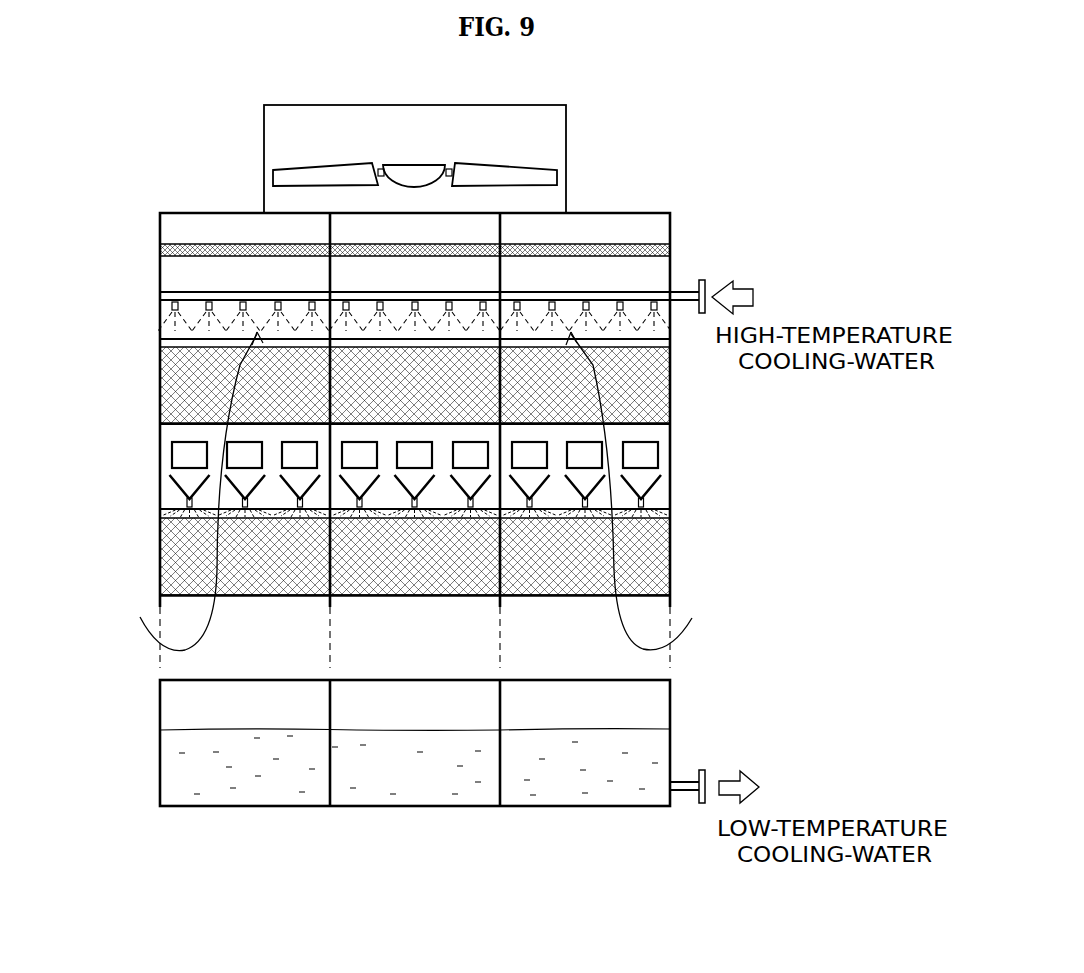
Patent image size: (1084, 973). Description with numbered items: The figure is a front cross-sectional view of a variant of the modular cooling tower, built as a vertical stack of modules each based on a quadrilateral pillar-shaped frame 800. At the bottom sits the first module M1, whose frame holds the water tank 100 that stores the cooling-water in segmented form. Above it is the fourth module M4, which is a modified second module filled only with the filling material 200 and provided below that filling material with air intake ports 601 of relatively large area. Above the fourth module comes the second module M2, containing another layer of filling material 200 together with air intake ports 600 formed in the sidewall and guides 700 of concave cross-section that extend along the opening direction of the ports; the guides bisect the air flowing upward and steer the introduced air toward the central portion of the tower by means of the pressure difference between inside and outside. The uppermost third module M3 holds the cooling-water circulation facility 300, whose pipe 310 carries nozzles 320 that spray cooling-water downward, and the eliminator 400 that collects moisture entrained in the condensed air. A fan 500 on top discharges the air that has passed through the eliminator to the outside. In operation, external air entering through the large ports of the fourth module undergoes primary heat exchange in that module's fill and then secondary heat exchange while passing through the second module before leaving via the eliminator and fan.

The water tank 100 is at (172, 778).
The filling material 200 is at (173, 385).
The cooling-water circulation facility 300 is at (699, 818).
The pipe 310 is at (175, 296).
The nozzles 320 is at (170, 307).
The eliminator 400 is at (675, 252).
The fan 500 is at (512, 178).
The air intake ports 600 is at (659, 453).
The air intake ports 601 is at (670, 657).
The guides 700 is at (178, 487).
The frame 800 is at (330, 712).
The first module M1 is at (691, 707).
The second module M2 is at (691, 391).
The third module M3 is at (689, 260).
The fourth module M4 is at (691, 559).